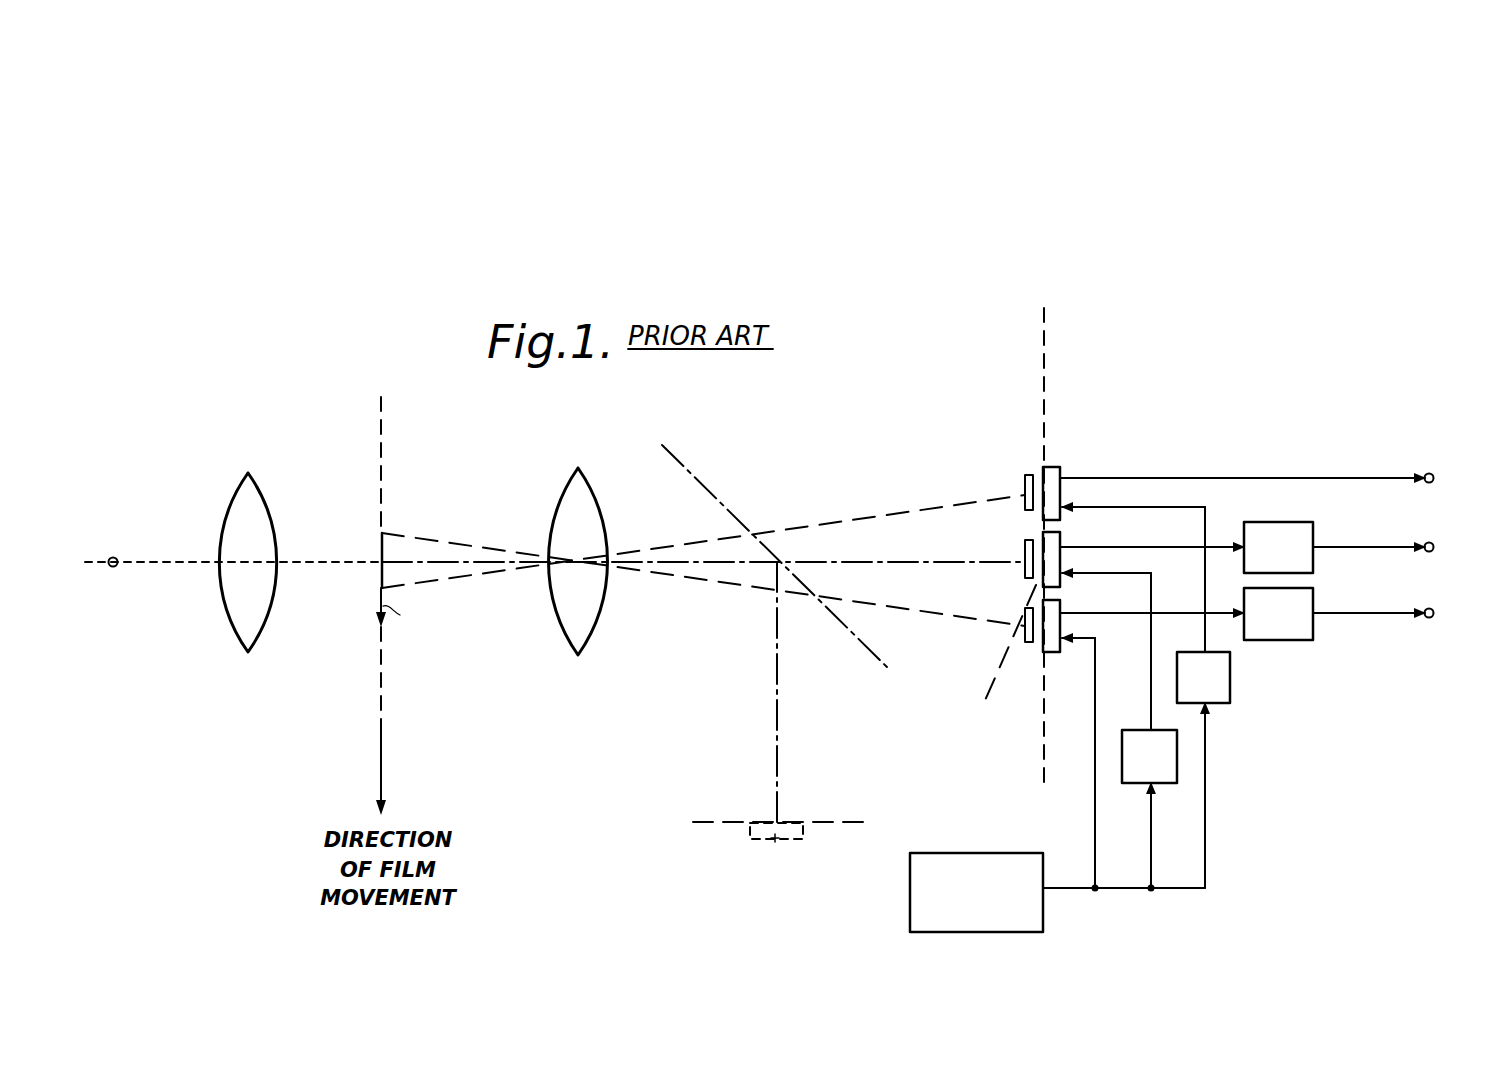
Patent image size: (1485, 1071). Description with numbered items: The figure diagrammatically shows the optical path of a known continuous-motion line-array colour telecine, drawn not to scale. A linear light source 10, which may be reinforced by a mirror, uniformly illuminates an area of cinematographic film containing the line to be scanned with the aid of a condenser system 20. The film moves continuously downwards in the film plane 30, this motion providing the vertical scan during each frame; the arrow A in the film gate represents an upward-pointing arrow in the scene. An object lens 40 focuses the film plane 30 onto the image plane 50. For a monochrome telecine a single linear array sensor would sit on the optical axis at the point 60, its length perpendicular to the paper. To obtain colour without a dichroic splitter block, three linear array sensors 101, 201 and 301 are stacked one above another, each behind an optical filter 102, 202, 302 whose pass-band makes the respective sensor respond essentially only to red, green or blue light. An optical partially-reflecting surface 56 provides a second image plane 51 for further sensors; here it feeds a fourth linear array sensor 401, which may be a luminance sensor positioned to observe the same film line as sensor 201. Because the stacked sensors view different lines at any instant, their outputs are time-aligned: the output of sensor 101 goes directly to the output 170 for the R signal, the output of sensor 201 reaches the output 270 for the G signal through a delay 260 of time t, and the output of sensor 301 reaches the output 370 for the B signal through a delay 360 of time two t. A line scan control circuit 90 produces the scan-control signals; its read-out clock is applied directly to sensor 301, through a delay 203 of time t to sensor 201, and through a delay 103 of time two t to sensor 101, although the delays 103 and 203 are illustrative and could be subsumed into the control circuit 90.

The linear light source 10 is at (115, 557).
The condenser system 20 is at (249, 475).
The film plane 30 is at (381, 398).
The object lens 40 is at (579, 470).
The image plane 50 is at (1045, 310).
The second image plane 51 is at (695, 820).
The optical partially-reflecting surface 56 is at (664, 447).
The point on optical axis 60 is at (1001, 661).
The line scan control circuit 90 is at (1043, 915).
The linear array sensor 101 is at (1080, 493).
The optical filter 102 is at (1025, 480).
The delay 103 is at (1230, 690).
The output 170 is at (1428, 474).
The linear array sensor 201 is at (1085, 559).
The optical filter 202 is at (1025, 544).
The delay 203 is at (1177, 765).
The delay 260 is at (1295, 521).
The output 270 is at (1428, 543).
The linear array sensor 301 is at (1086, 626).
The optical filter 302 is at (1030, 643).
The delay 360 is at (1296, 641).
The output 370 is at (1429, 609).
The fourth linear array sensor 401 is at (776, 851).